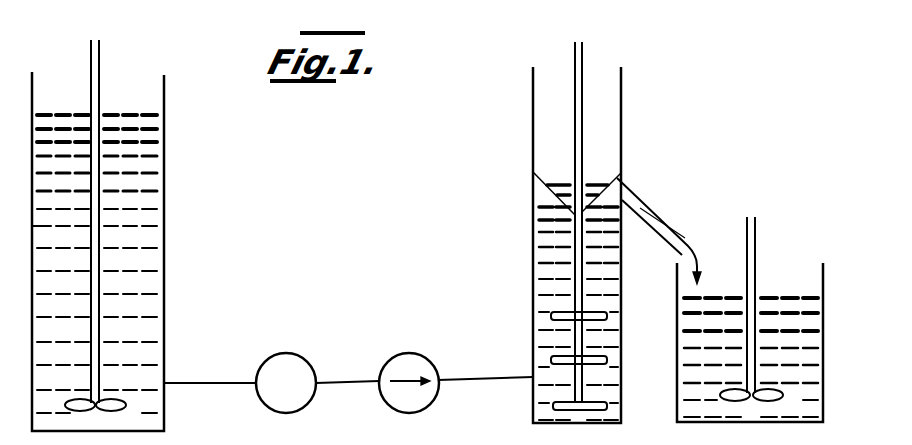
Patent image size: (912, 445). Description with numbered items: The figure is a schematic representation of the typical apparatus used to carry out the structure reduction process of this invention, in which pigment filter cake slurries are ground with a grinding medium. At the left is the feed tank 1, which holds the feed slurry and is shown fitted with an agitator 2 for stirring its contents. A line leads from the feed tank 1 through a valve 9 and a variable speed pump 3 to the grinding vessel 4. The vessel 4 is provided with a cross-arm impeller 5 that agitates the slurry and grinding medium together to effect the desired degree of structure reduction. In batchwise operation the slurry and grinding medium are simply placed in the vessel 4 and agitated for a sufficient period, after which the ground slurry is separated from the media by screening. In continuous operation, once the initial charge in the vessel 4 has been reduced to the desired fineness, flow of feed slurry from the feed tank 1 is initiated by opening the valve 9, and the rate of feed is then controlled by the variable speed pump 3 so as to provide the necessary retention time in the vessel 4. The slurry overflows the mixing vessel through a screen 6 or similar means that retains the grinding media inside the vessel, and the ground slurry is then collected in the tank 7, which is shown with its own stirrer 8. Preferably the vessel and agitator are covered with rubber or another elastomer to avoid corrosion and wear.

The feed tank 1 is at (165, 228).
The stirrer of first vessel 2 is at (99, 61).
The variable speed pump 3 is at (409, 352).
The vessel 4 is at (533, 237).
The cross-arm impeller 5 is at (582, 62).
The screen 6 is at (621, 186).
The tank 7 is at (823, 320).
The stirrer of third vessel 8 is at (755, 232).
The valve 9 is at (285, 352).